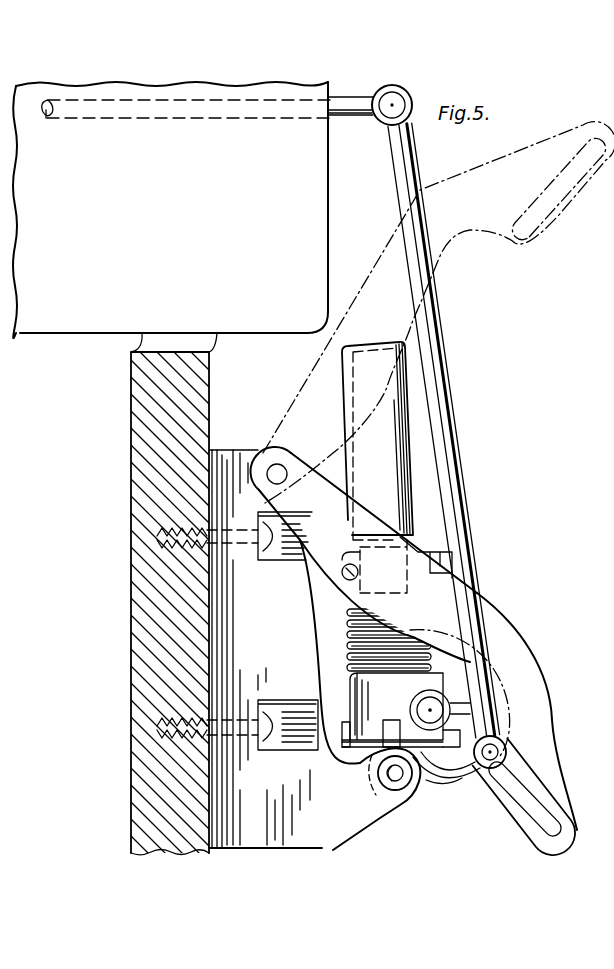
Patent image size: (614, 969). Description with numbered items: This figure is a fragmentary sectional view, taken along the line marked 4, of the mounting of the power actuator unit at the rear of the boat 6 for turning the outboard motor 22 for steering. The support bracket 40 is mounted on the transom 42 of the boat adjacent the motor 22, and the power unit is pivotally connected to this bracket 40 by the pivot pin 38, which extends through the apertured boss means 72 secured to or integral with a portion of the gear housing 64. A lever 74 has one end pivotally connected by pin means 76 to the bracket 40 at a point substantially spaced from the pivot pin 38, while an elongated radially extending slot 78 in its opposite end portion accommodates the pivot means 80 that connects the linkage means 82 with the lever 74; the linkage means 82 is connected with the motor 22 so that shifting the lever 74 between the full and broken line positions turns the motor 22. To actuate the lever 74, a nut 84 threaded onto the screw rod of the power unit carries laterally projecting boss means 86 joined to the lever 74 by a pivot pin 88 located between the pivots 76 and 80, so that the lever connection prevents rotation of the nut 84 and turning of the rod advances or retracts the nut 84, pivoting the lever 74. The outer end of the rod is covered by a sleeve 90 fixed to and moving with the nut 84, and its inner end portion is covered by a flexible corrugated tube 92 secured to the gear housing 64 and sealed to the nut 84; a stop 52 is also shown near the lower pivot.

The section line 4- 4 is at (115, 852).
The cabinet 6 is at (165, 231).
The outboard motor 22 is at (77, 338).
The pivot pin 38 is at (396, 791).
The support bracket 40 is at (217, 680).
The transom 42 is at (150, 648).
The stop 52 is at (470, 783).
The gear housing 64 is at (380, 703).
The apertured boss means 72 is at (437, 787).
The lever 74 is at (490, 618).
The pin means 76 is at (277, 474).
The elongated radially extending slot 78 is at (533, 788).
The pivot means 80 is at (507, 752).
The linkage means 82 is at (450, 452).
The nut 84 is at (410, 580).
The laterally projecting boss means 86 is at (342, 572).
The pivot pin 88 is at (347, 579).
The sleeve 90 is at (413, 452).
The flexible corrugated tube 92 is at (350, 652).